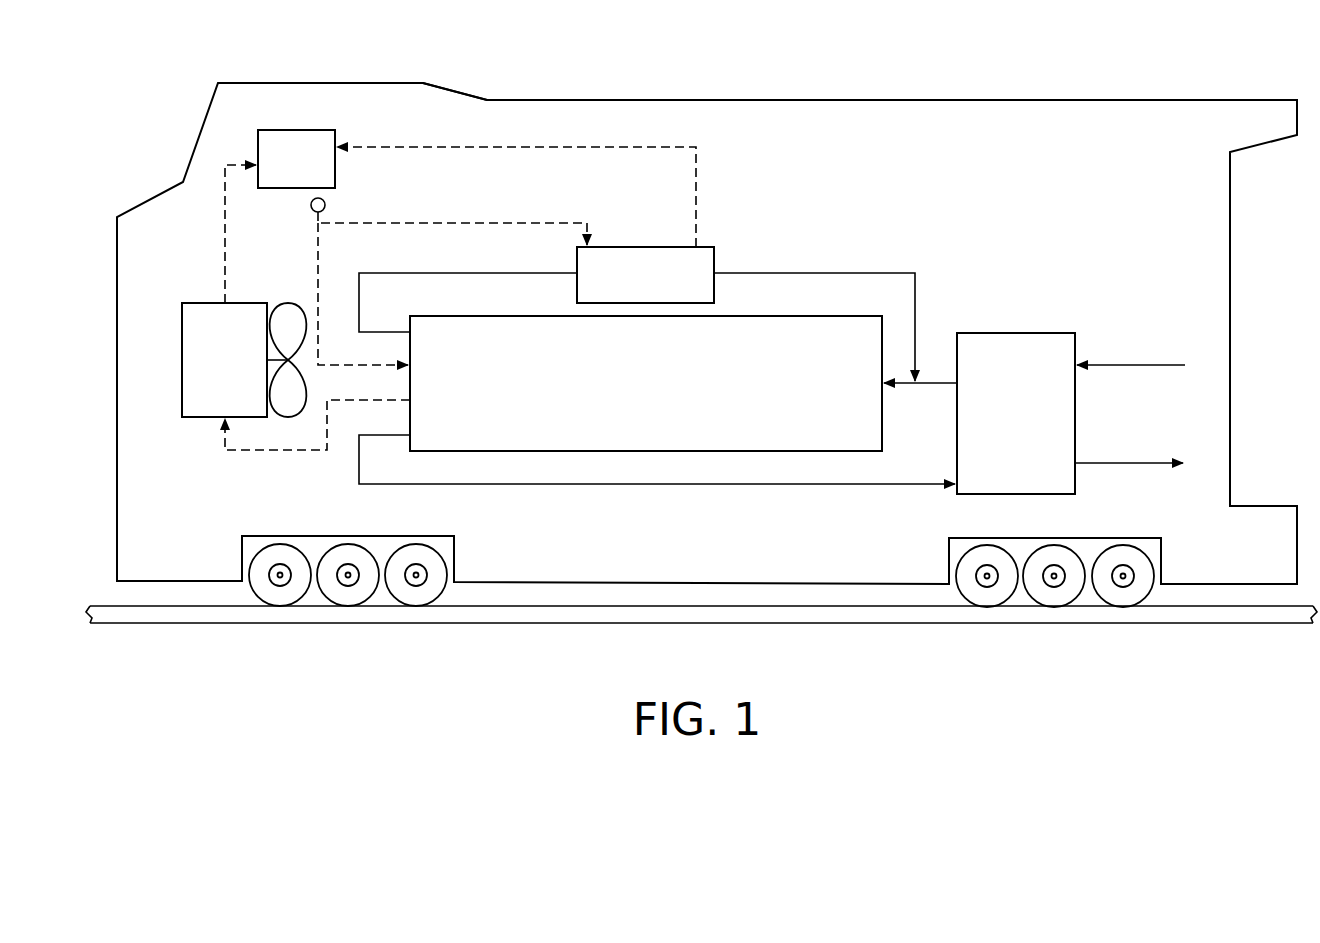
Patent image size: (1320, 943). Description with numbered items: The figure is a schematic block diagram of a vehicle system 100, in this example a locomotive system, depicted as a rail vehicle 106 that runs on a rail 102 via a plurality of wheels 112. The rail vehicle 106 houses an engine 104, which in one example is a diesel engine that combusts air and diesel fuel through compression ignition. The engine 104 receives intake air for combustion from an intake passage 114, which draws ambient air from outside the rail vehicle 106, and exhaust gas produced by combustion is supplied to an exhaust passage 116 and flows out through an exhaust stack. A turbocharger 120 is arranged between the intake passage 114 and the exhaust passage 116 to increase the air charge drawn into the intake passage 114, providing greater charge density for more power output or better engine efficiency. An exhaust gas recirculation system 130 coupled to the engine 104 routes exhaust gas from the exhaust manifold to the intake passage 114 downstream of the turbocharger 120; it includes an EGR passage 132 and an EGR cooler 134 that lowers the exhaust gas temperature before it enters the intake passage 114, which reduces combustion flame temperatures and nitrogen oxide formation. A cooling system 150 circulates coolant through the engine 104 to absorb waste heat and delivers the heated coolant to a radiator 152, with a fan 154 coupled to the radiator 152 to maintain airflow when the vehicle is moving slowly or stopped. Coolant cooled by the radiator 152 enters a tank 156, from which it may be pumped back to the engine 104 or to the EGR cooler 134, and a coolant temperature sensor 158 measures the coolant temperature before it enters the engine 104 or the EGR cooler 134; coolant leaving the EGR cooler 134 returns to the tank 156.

The vehicle system 100 is at (1137, 44).
The rail 102 is at (1228, 624).
The engine 104 is at (646, 383).
The rail vehicle 106 is at (988, 100).
The wheels 112 is at (442, 563).
The intake passage 114 is at (1110, 366).
The exhaust passage 116 is at (1090, 464).
The turbocharger 120 is at (1016, 413).
The exhaust gas recirculation system 130 is at (916, 260).
The EGR passage 132 is at (437, 273).
The EGR cooler 134 is at (645, 275).
The cooling system 150 is at (199, 261).
The radiator 152 is at (224, 360).
The fan 154 is at (296, 303).
The tank 156 is at (460, 216).
The coolant temperature sensor 158 is at (326, 209).